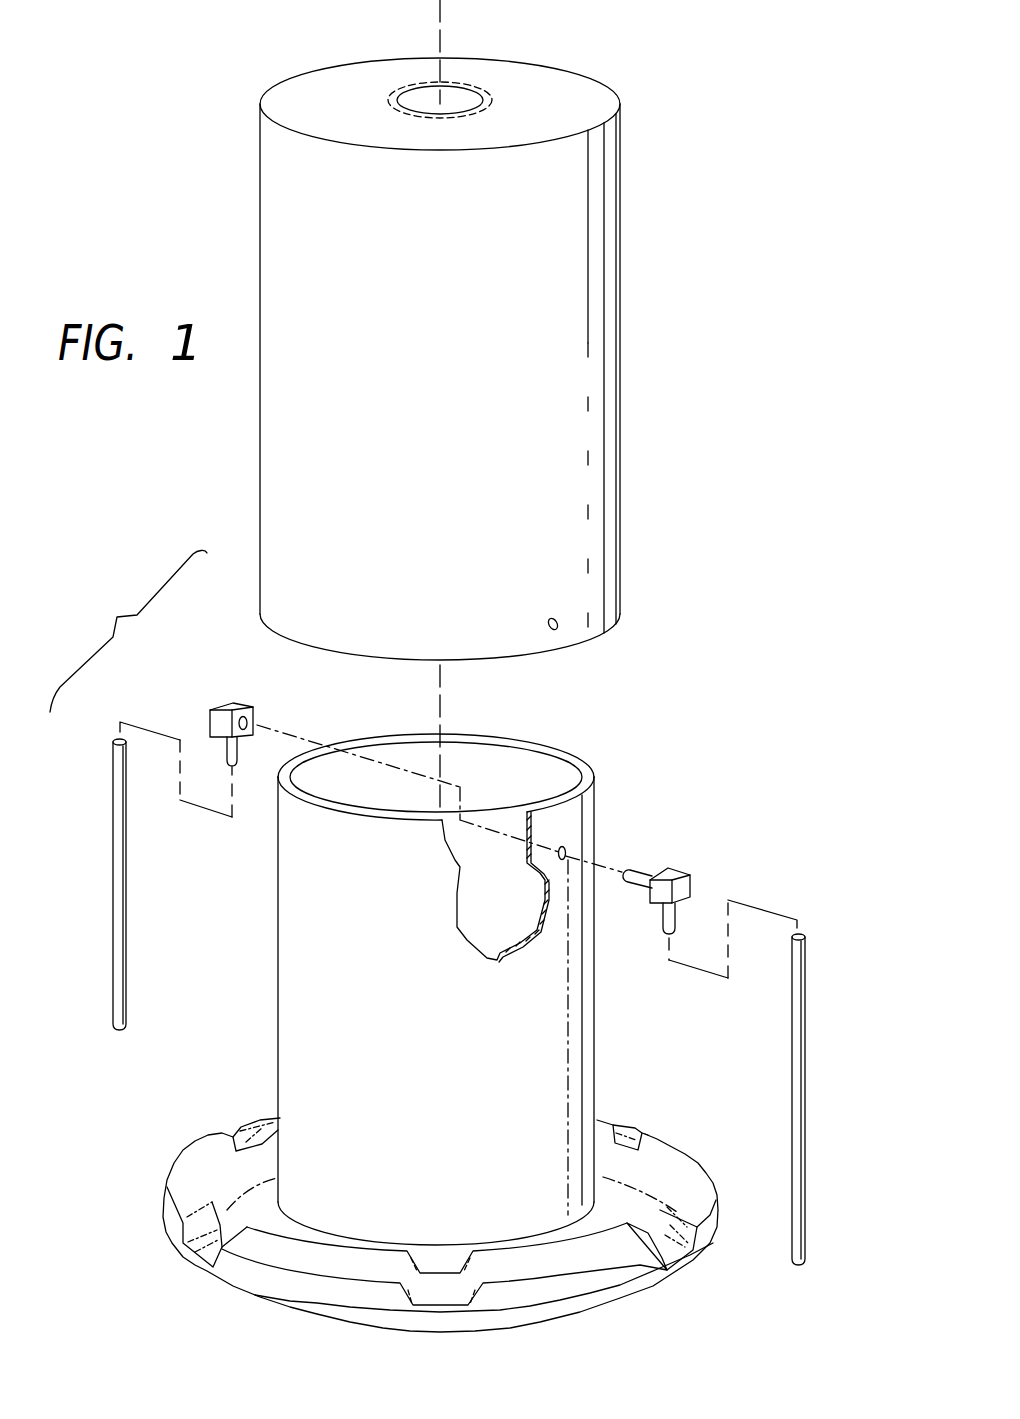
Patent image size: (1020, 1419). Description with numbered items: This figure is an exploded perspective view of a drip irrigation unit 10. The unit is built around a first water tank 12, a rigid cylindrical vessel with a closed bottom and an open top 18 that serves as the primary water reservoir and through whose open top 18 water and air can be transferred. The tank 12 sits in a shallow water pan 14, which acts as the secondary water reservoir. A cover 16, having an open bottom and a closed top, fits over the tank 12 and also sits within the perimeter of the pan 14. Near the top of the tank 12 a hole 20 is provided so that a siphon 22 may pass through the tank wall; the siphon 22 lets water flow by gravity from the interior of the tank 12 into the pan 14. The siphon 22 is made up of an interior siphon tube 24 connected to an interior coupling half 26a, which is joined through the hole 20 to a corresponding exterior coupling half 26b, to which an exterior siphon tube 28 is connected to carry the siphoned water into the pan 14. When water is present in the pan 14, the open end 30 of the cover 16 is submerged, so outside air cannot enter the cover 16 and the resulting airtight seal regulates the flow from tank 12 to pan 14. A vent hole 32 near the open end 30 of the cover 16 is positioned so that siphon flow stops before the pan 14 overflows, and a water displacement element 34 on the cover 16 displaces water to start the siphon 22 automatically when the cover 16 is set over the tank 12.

The drip irrigation unit 10 is at (718, 507).
The first water tank 12 is at (583, 810).
The shallow water pan 14 is at (163, 1217).
The cover 16 is at (602, 245).
The top of the tank 18 is at (540, 770).
The hole 20 is at (567, 848).
The siphon 22 is at (817, 953).
The interior siphon tube 24 is at (113, 893).
The interior coupling half 26a is at (227, 708).
The exterior coupling half 26b is at (687, 888).
The exterior siphon tube 28 is at (806, 1100).
The open end of the cover 30 is at (592, 641).
The vent hole 32 is at (556, 621).
The water displacement element 34 is at (462, 100).